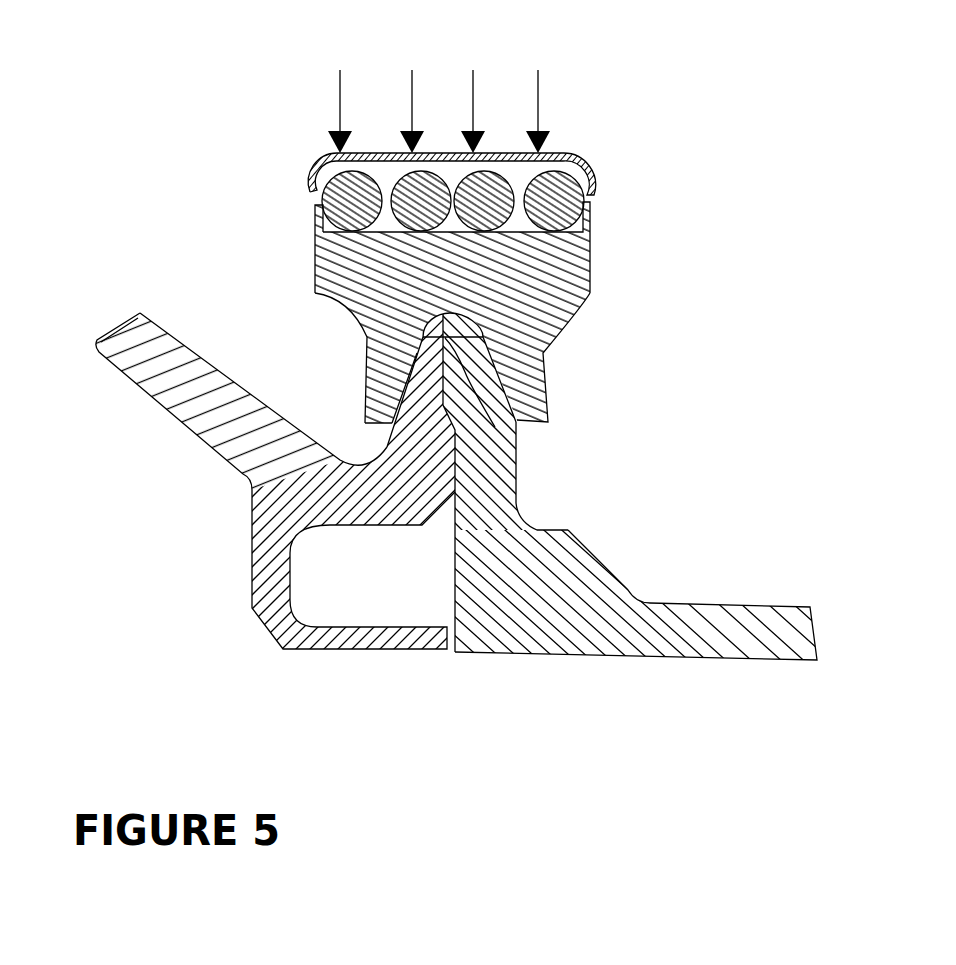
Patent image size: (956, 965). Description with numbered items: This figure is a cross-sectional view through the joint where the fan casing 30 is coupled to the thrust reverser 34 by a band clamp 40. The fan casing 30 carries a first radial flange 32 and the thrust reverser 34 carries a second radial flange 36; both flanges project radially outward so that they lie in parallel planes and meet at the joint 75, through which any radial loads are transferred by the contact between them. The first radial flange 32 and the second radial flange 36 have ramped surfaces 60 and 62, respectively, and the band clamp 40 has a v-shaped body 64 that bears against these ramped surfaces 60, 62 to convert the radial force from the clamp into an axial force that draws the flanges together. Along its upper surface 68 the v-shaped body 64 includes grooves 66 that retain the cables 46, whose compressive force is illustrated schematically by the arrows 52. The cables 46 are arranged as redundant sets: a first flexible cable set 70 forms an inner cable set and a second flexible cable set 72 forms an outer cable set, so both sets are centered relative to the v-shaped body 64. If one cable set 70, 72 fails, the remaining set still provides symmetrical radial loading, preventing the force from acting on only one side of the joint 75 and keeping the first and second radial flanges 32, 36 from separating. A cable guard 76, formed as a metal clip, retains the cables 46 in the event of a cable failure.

The fan casing 30 is at (679, 591).
The first radial flange 32 is at (497, 466).
The thrust reverser 34 is at (162, 328).
The second radial flange 36 is at (370, 393).
The band clamp 40 is at (587, 278).
The cables 46 is at (584, 180).
The arrows 52 is at (341, 84).
The ramped surface 60 is at (488, 379).
The ramped surface 62 is at (368, 340).
The v-shaped body 64 is at (540, 356).
The grooves 66 is at (316, 233).
The upper surface 68 is at (307, 193).
The first flexible cable set 70 is at (393, 178).
The second flexible cable set 72 is at (325, 166).
The joint 75 is at (518, 443).
The cable guard 76 is at (310, 158).